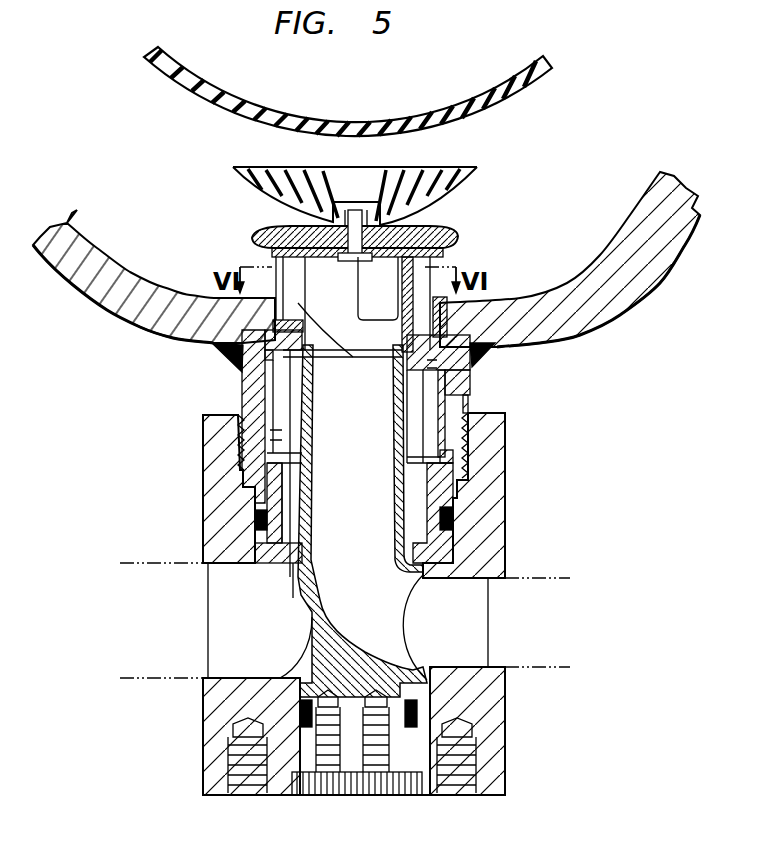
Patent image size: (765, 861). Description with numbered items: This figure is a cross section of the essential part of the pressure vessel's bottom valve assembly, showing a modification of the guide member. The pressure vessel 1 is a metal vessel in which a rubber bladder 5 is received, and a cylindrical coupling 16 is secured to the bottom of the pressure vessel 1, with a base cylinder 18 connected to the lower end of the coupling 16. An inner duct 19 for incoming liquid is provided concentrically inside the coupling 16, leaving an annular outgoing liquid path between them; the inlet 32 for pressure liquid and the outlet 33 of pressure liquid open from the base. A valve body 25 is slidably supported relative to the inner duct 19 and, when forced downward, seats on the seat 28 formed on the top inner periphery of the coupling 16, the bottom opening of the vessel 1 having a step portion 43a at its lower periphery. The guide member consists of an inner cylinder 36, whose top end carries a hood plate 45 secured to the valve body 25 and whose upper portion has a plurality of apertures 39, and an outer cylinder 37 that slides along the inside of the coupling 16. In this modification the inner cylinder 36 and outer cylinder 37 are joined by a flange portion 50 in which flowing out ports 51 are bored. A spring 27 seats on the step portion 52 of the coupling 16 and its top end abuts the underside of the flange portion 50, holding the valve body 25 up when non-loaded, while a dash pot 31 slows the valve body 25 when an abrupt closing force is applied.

The pressure vessel 1 is at (652, 277).
The bladder 5 is at (517, 90).
The cylindrical coupling 16 is at (457, 455).
The base cylinder 18 is at (487, 753).
The inner duct 19 is at (463, 508).
The valve body 25 is at (437, 228).
The spring 27 is at (433, 433).
The seat 28 is at (447, 293).
The dash pot 31 is at (240, 367).
The inlet 32 is at (533, 657).
The outlet 33 is at (180, 670).
The inner cylinder 36 is at (412, 268).
The outer cylinder 37 is at (463, 400).
The apertures 39 is at (380, 300).
The step portion 43a is at (443, 320).
The hood plate 45 is at (278, 262).
The flange portion 50 is at (278, 320).
The flowing out ports 51 is at (470, 377).
The step portion 52 is at (458, 482).